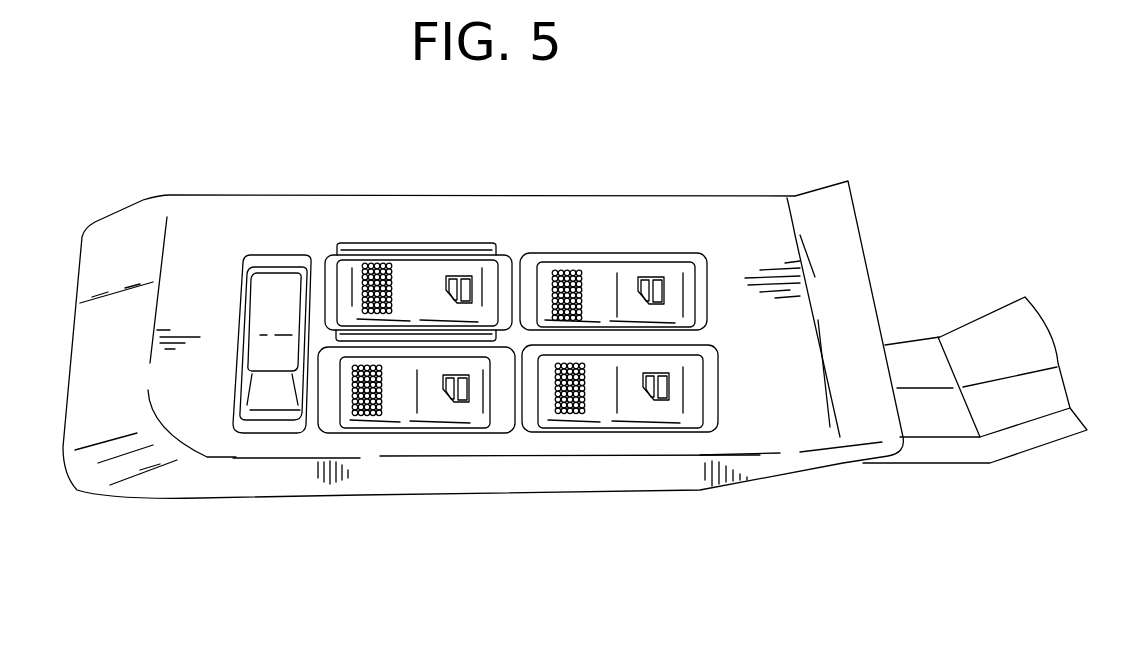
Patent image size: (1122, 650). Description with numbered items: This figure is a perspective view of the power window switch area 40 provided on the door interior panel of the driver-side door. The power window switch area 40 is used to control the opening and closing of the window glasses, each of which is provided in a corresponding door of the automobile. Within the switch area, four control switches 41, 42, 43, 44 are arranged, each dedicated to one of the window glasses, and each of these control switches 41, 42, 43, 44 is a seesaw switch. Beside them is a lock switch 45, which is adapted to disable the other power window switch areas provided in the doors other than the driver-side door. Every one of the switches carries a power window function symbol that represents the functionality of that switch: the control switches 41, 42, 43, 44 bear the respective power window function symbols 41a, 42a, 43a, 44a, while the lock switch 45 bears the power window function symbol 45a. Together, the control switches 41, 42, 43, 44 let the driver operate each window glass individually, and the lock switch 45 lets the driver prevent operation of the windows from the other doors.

The power window switch area 40 is at (568, 225).
The control switch 41 is at (418, 238).
The power window function symbol 41a is at (455, 277).
The control switch 42 is at (427, 463).
The power window function symbol 42a is at (462, 407).
The control switch 43 is at (643, 229).
The power window function symbol 43a is at (655, 280).
The control switch 44 is at (630, 458).
The power window function symbol 44a is at (660, 407).
The lock switch 45 is at (249, 276).
The power window function symbol 45a is at (263, 350).